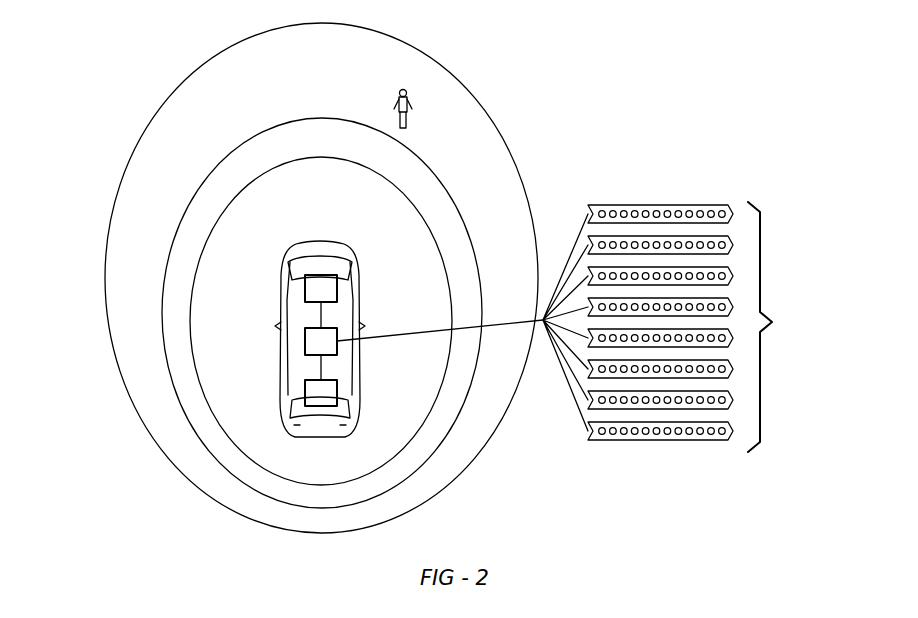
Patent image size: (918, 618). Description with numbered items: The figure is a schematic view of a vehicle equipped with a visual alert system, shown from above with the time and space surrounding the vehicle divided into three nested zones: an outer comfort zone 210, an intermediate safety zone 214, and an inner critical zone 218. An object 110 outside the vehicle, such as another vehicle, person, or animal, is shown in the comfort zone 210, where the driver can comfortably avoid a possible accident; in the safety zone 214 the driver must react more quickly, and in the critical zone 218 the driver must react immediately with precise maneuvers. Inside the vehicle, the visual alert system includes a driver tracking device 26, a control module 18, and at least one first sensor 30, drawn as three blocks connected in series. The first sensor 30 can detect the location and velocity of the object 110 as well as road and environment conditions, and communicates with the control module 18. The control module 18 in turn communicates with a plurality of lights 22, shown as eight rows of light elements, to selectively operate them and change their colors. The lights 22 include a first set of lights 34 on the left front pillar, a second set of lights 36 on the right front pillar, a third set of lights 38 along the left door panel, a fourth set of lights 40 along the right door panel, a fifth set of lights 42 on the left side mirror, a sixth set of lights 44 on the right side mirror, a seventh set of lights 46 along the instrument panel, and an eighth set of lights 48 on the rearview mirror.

The comfort zone 210 is at (222, 72).
The safety zone 214 is at (247, 160).
The critical zone 218 is at (240, 222).
The object 110 is at (412, 99).
The driver tracking device 26 is at (305, 284).
The control module 18 is at (305, 341).
The first sensor 30 is at (305, 400).
The lights 22 is at (700, 315).
The first set of lights 34 is at (690, 206).
The second set of lights 36 is at (712, 238).
The third set of lights 38 is at (636, 276).
The fourth set of lights 40 is at (657, 303).
The fifth set of lights 42 is at (623, 369).
The sixth set of lights 44 is at (657, 393).
The seventh set of lights 46 is at (697, 415).
The eighth set of lights 48 is at (712, 440).